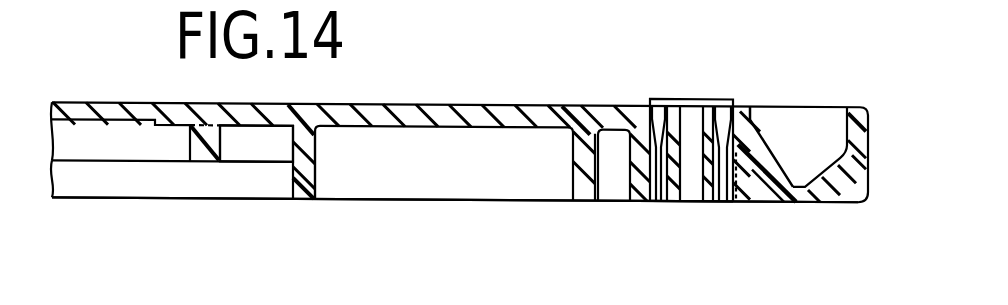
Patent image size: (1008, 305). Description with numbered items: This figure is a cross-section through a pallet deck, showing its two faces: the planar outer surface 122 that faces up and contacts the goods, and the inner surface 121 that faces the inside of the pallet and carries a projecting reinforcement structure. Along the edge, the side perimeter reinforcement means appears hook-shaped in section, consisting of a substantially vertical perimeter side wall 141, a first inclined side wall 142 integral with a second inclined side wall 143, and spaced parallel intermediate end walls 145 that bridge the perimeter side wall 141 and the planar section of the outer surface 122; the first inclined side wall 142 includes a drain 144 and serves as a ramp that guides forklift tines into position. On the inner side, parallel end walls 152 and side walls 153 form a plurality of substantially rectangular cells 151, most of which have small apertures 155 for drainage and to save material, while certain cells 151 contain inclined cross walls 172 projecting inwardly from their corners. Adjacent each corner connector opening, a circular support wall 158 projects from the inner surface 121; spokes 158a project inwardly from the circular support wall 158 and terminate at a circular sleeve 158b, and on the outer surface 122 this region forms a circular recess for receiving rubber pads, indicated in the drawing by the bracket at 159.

The outer surface 122 is at (486, 82).
The apertures 155 is at (393, 103).
The inclined cross walls 172 is at (204, 152).
The side walls 153 is at (307, 198).
The end walls 152 is at (402, 198).
The inner surface 121 is at (431, 214).
The cells 151 is at (513, 198).
The nozzle plate region 159 is at (665, 96).
The circular support wall 158 is at (735, 233).
The spokes 158a is at (725, 198).
The circular sleeve 158b is at (670, 200).
The second inclined side wall 143 is at (762, 130).
The intermediate end walls 145 is at (808, 122).
The perimeter side wall 141 is at (857, 115).
The drain 144 is at (816, 196).
The first inclined side wall 142 is at (838, 196).